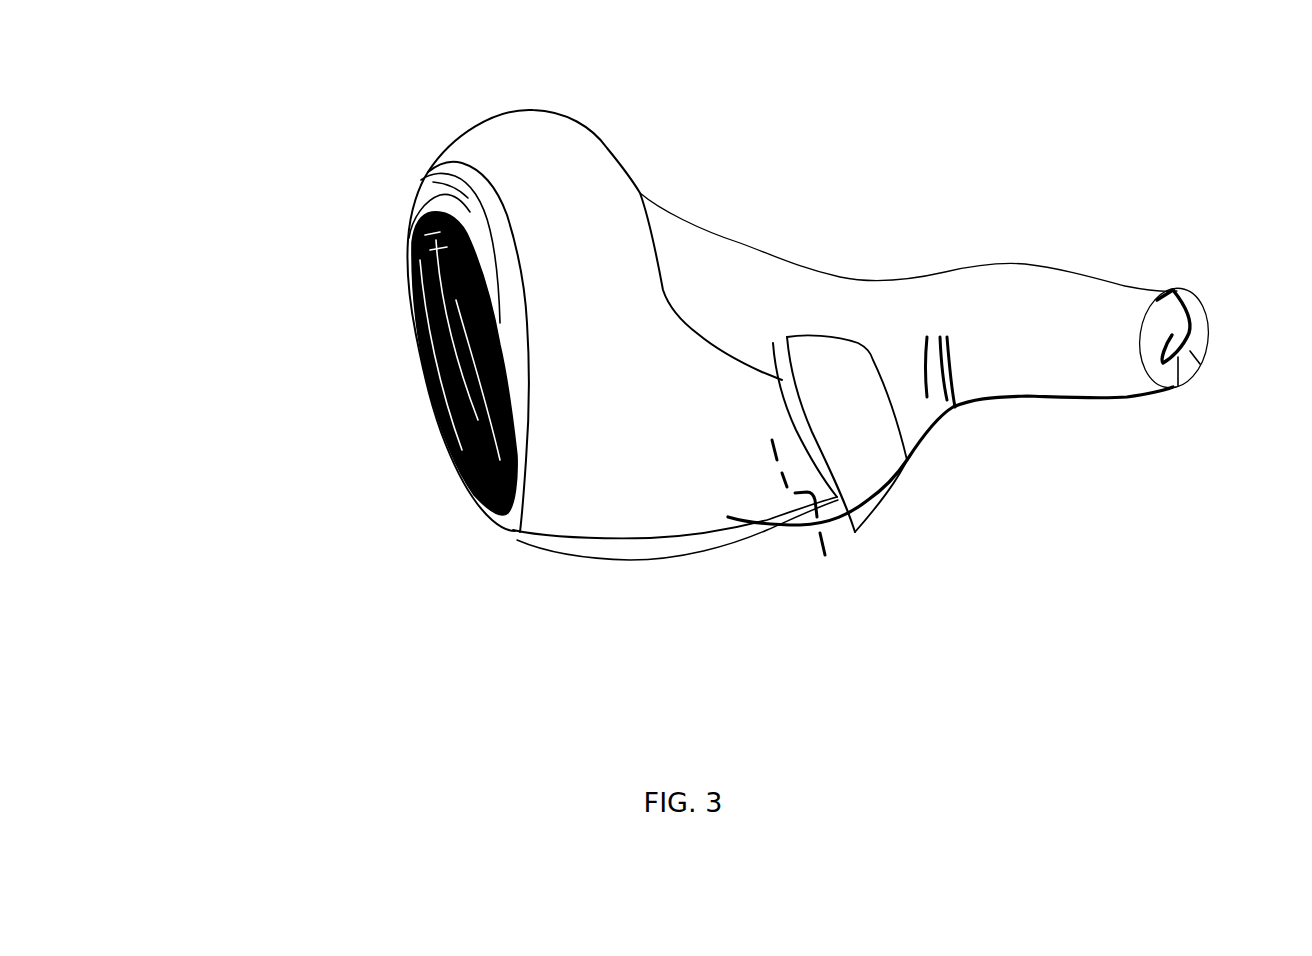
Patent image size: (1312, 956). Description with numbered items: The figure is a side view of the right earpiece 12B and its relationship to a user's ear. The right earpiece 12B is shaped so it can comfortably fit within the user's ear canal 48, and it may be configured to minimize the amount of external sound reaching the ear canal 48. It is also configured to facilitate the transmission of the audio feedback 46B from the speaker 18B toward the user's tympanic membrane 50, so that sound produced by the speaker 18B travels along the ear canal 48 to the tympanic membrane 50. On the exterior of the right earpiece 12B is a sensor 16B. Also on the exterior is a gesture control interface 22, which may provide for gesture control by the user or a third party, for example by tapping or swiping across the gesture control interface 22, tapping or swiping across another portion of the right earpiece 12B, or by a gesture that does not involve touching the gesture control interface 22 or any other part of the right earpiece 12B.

The right earpiece 12B is at (285, 154).
The sensor 16B is at (408, 261).
The gesture control interface 22 is at (436, 388).
The ear canal 48 is at (1078, 303).
The audio feedback 46B is at (927, 366).
The speaker 18B is at (839, 473).
The tympanic membrane 50 is at (1193, 340).